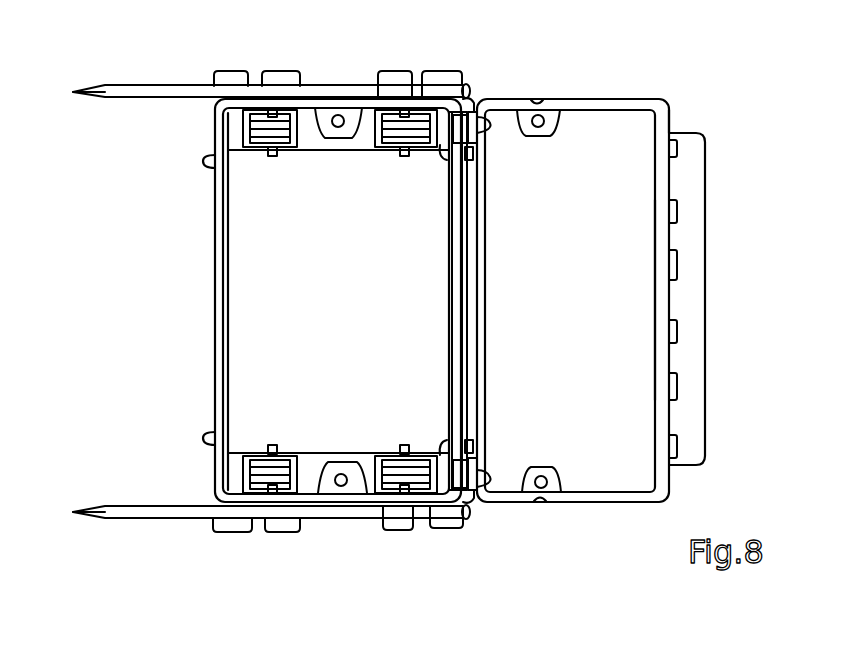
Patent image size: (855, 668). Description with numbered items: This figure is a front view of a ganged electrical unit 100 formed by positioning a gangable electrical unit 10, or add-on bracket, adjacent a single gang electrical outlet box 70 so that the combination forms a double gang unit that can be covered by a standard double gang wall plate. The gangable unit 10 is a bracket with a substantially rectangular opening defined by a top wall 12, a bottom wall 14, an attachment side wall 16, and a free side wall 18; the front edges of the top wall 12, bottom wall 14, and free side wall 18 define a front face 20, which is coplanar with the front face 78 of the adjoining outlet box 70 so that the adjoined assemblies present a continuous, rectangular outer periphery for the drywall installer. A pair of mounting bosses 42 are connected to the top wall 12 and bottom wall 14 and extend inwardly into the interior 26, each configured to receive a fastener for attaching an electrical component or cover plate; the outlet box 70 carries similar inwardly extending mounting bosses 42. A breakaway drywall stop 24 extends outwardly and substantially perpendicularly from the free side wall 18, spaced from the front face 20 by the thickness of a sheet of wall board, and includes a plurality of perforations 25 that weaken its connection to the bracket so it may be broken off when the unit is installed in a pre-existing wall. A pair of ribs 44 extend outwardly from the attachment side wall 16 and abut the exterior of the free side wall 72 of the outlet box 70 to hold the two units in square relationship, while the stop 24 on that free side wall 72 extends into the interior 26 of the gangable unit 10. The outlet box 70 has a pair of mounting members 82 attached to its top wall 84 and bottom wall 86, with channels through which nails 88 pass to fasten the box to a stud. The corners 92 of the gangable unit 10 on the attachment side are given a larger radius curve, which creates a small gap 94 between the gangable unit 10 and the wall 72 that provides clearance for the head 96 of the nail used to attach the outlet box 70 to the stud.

The gangable electrical unit 10 is at (645, 96).
The top wall 12 is at (592, 97).
The bottom wall 14 is at (605, 507).
The attachment side wall 16 is at (480, 153).
The free side wall 18 is at (671, 115).
The front face 20 is at (613, 108).
The stop 24 is at (693, 245).
The perforations 25 is at (677, 150).
The interior 26 is at (559, 284).
The mounting bosses 42 is at (355, 147).
The ribs 44 is at (462, 200).
The electrical outlet box 70 is at (207, 285).
The free side wall 72 is at (460, 325).
The front face 78 is at (258, 500).
The mounting members 82 is at (398, 71).
The top wall 84 is at (313, 83).
The bottom wall 86 is at (322, 507).
The nails 88 is at (441, 91).
The corners 92 is at (490, 123).
The gap 94 is at (472, 112).
The head 96 is at (468, 104).
The ganged electrical unit 100 is at (470, 58).